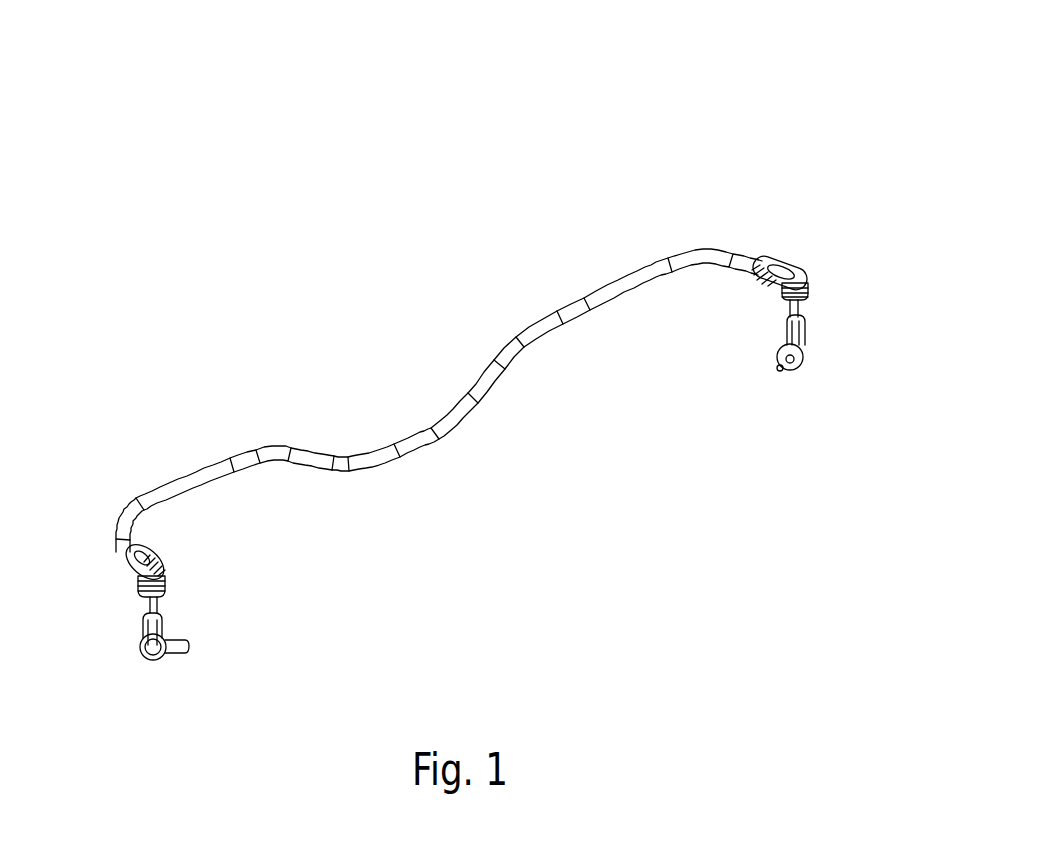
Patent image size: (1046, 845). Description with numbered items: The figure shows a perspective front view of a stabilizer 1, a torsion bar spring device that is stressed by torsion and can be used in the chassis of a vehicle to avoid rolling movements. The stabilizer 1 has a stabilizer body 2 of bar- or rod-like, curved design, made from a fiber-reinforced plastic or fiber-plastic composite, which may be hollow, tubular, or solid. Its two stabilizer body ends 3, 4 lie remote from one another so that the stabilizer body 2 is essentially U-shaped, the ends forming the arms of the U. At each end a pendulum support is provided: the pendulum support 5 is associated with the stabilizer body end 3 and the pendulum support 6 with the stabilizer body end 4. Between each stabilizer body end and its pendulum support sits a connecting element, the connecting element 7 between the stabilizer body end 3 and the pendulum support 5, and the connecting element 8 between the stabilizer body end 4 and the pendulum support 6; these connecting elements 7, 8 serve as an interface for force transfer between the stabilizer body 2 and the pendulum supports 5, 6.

The stabilizer 1 is at (626, 133).
The stabilizer body 2 is at (527, 318).
The stabilizer body end 3 is at (753, 253).
The stabilizer body end 4 is at (117, 553).
The pendulum support 5 is at (820, 340).
The pendulum support 6 is at (133, 653).
The connecting element 7 is at (795, 258).
The connecting element 8 is at (128, 575).